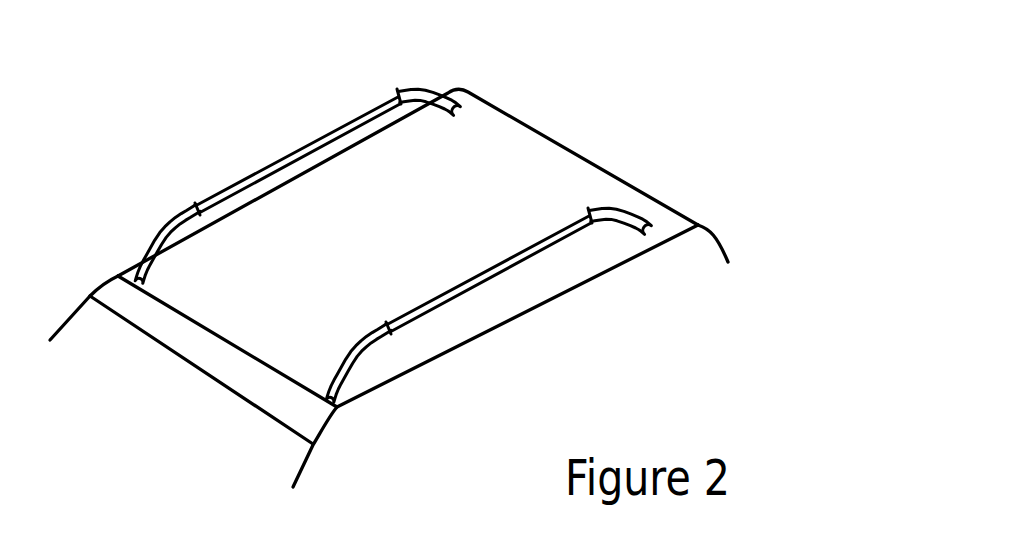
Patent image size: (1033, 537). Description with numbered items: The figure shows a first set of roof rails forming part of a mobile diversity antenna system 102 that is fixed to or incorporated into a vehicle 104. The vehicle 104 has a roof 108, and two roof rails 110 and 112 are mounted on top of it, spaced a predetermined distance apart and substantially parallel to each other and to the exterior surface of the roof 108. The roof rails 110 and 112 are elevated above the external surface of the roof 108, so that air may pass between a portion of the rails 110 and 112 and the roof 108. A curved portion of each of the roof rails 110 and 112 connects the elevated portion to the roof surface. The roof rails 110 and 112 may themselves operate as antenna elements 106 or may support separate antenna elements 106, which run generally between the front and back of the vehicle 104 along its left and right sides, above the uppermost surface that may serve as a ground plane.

The mobile diversity antenna system 102 is at (411, 203).
The vehicle 104 is at (712, 232).
The antenna elements 106 is at (213, 195).
The roof 108 is at (523, 163).
The roof rail 110 is at (486, 269).
The roof rail 112 is at (374, 102).